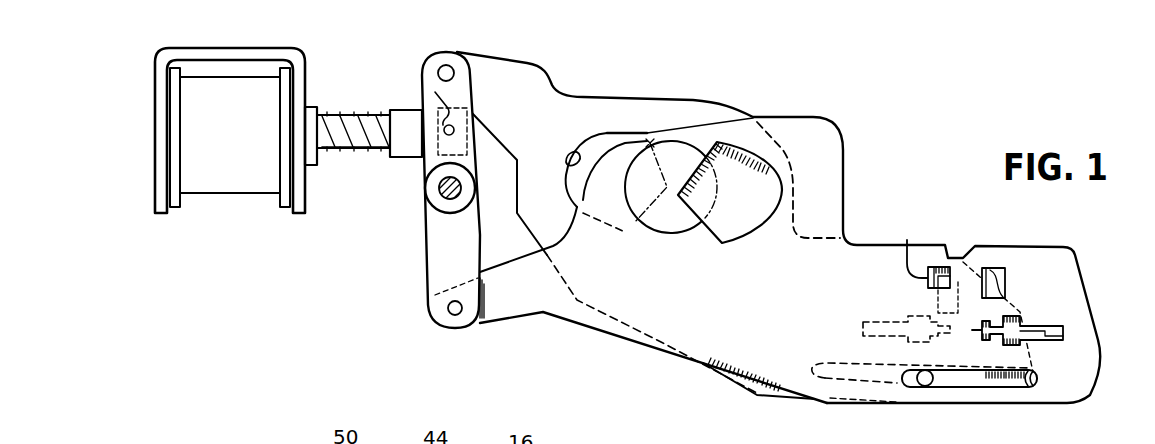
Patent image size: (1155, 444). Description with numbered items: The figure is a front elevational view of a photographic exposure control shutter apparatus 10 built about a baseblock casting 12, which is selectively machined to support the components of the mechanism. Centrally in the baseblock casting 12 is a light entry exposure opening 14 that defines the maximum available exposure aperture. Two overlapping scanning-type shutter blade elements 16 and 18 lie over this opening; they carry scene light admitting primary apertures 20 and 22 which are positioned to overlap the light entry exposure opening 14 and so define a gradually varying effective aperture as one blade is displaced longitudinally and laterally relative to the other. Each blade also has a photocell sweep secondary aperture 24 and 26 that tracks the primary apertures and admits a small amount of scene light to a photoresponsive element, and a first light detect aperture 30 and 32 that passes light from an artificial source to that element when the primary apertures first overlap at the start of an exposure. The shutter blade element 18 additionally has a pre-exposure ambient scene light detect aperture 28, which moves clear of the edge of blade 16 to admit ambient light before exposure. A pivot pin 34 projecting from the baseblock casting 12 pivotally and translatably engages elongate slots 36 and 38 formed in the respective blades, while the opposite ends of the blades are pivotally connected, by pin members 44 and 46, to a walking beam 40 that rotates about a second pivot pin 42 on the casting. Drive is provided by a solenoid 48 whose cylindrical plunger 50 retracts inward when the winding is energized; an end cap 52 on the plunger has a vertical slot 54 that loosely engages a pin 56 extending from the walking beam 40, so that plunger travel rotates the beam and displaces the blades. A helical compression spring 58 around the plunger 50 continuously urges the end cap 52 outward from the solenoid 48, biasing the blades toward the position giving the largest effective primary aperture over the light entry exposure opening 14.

The photographic exposure control shutter apparatus 10 is at (937, 83).
The baseblock casting 12 is at (955, 182).
The light entry exposure opening 14 is at (663, 233).
The shutter blade element 16 is at (583, 95).
The shutter blade element 18 is at (513, 322).
The scene light admitting primary aperture 20 is at (566, 165).
The scene light admitting primary aperture 22 is at (742, 243).
The photocell sweep secondary aperture 24 is at (860, 328).
The photocell sweep secondary aperture 26 is at (1063, 331).
The pre-exposure ambient scene light detect aperture 28 is at (907, 240).
The first light detect aperture 30 is at (928, 280).
The first light detect aperture 32 is at (1005, 280).
The pivot pin 34 is at (927, 385).
The elongate slot 36 is at (830, 383).
The elongate slot 38 is at (1012, 385).
The walking beam 40 is at (427, 270).
The pivot pin 42 is at (435, 203).
The pin member 44 is at (447, 68).
The pin member 46 is at (440, 337).
The solenoid 48 is at (225, 225).
The plunger 50 is at (333, 118).
The end cap 52 is at (408, 158).
The slot 54 is at (438, 103).
The pin 56 is at (449, 135).
The helical compression spring 58 is at (350, 157).